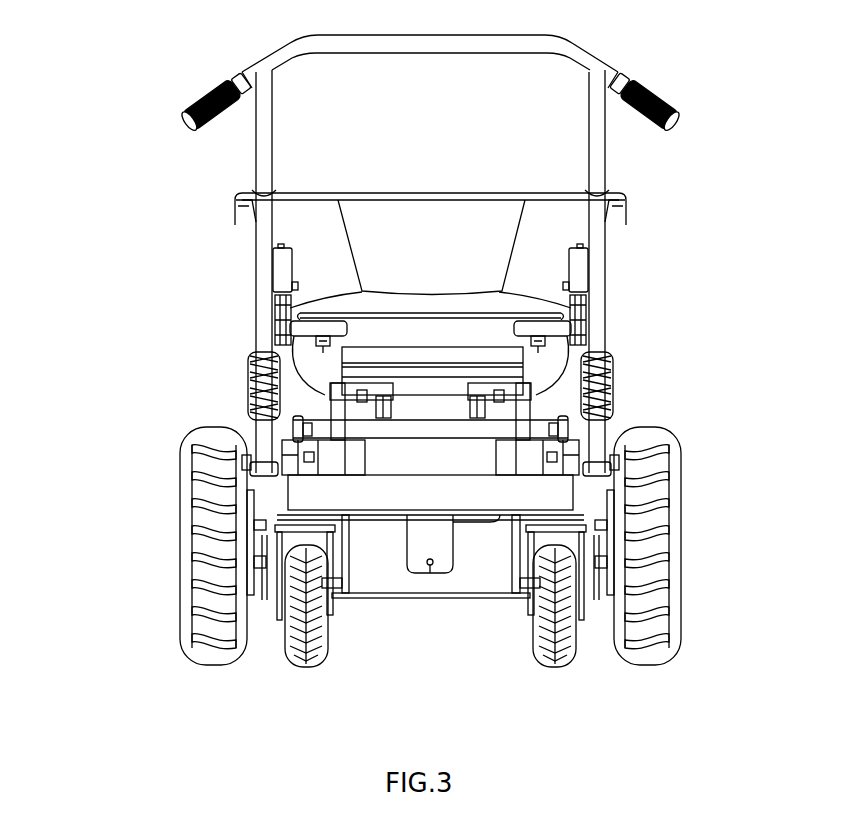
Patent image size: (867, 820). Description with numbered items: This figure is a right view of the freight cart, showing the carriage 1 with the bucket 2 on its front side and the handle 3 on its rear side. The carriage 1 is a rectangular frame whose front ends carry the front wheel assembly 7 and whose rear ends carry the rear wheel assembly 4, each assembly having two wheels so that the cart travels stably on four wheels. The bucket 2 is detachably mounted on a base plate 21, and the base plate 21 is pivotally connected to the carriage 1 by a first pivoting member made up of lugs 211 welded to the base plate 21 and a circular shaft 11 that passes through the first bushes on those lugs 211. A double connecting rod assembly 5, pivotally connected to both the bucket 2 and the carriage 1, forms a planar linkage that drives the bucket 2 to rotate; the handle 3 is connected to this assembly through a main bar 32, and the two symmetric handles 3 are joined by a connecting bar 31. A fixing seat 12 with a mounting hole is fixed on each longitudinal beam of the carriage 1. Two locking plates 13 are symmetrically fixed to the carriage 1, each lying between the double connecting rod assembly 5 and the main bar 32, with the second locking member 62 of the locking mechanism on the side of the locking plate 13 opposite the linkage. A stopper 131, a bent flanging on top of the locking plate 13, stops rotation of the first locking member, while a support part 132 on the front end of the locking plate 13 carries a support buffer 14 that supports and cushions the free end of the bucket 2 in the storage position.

The carriage 1 is at (422, 488).
The bucket 2 is at (550, 230).
The handle 3 is at (770, 73).
The rear wheel assembly 4 is at (300, 655).
The double connecting rod assembly 5 is at (518, 550).
The front wheel assembly 7 is at (210, 592).
The circular shaft 11 is at (430, 423).
The fixing seat 12 is at (558, 455).
The locking plate 13 is at (615, 410).
The support buffer 14 is at (275, 315).
The base plate 21 is at (477, 332).
The connecting bar 31 is at (398, 47).
The main bar 32 is at (268, 268).
The second locking member 62 is at (253, 380).
The stopper 131 is at (282, 258).
The support part 132 is at (318, 332).
The lug 211 is at (477, 410).